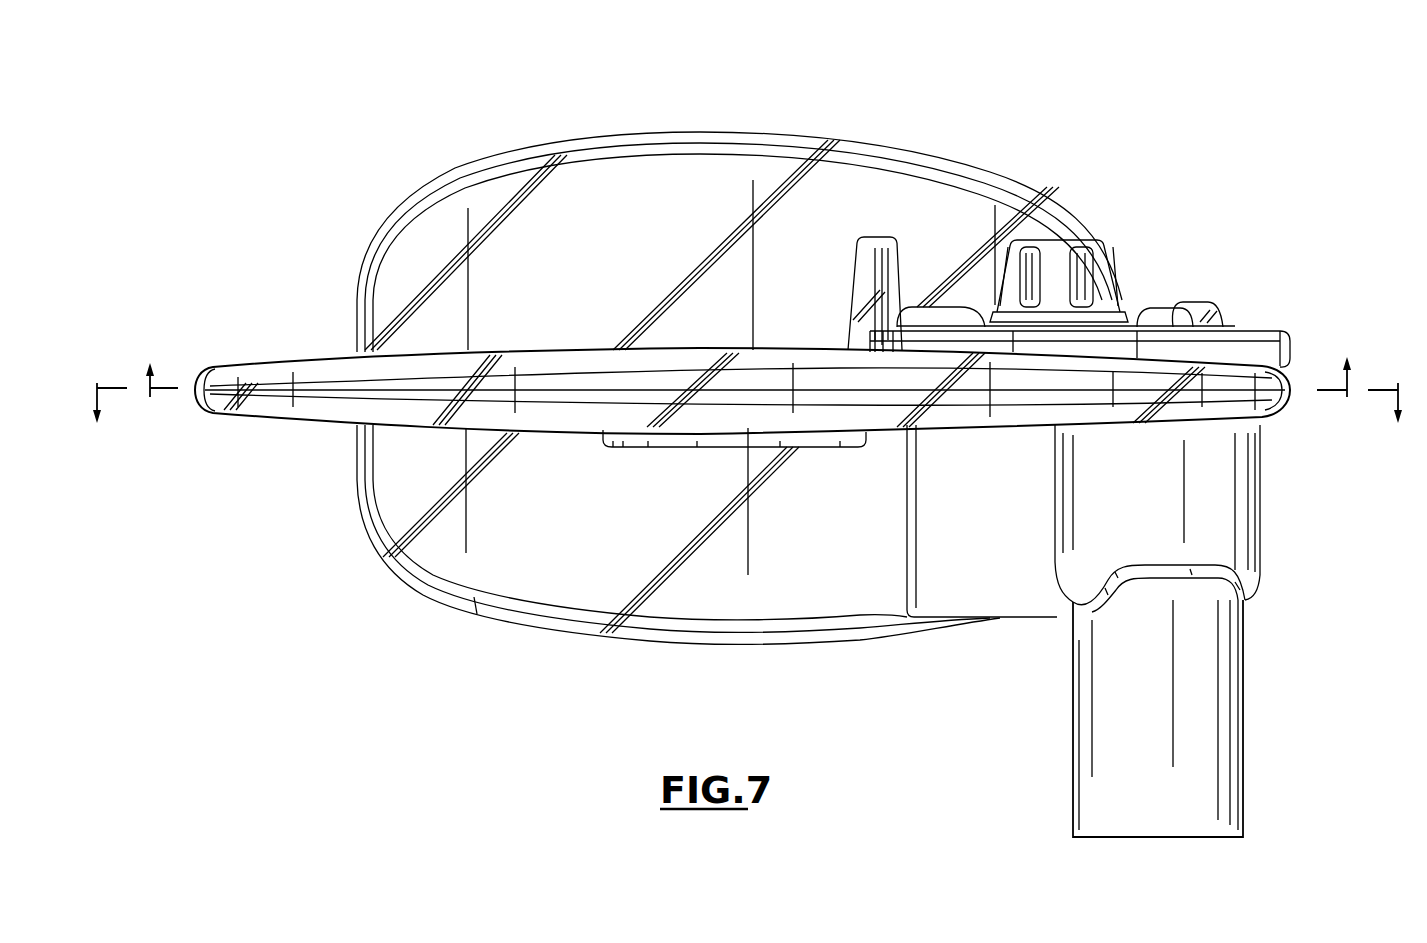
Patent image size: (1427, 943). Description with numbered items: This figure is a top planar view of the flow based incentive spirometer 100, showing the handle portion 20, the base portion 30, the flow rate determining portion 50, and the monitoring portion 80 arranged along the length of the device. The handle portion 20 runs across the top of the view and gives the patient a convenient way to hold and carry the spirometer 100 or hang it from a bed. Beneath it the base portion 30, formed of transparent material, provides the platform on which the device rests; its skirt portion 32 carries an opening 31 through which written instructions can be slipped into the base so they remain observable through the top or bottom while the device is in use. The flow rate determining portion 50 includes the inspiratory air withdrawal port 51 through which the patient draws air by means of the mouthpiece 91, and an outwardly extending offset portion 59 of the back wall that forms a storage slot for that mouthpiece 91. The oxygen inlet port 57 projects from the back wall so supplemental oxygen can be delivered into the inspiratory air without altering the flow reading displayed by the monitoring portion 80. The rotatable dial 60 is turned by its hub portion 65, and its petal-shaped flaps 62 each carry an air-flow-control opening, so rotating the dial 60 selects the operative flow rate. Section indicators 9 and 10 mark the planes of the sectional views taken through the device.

The flow based incentive spirometer 100 is at (647, 122).
The handle portion 20 is at (270, 352).
The base portion 30 is at (427, 252).
The opening 31 is at (515, 617).
The skirt portion 32 is at (362, 463).
The flow rate determining portion 50 is at (989, 440).
The inspiratory air withdrawal port 51 is at (1012, 542).
The oxygen inlet port 57 is at (858, 278).
The outwardly extending offset portion 59 is at (1268, 345).
The rotatable dial 60 is at (1128, 260).
The petal-shaped flaps 62 is at (1218, 312).
The hub portion 65 is at (1055, 255).
The monitoring portion 80 is at (706, 456).
The mouthpiece 91 is at (1198, 679).
The section line 9- 9 is at (750, 395).
The section line 10- 10 is at (751, 385).